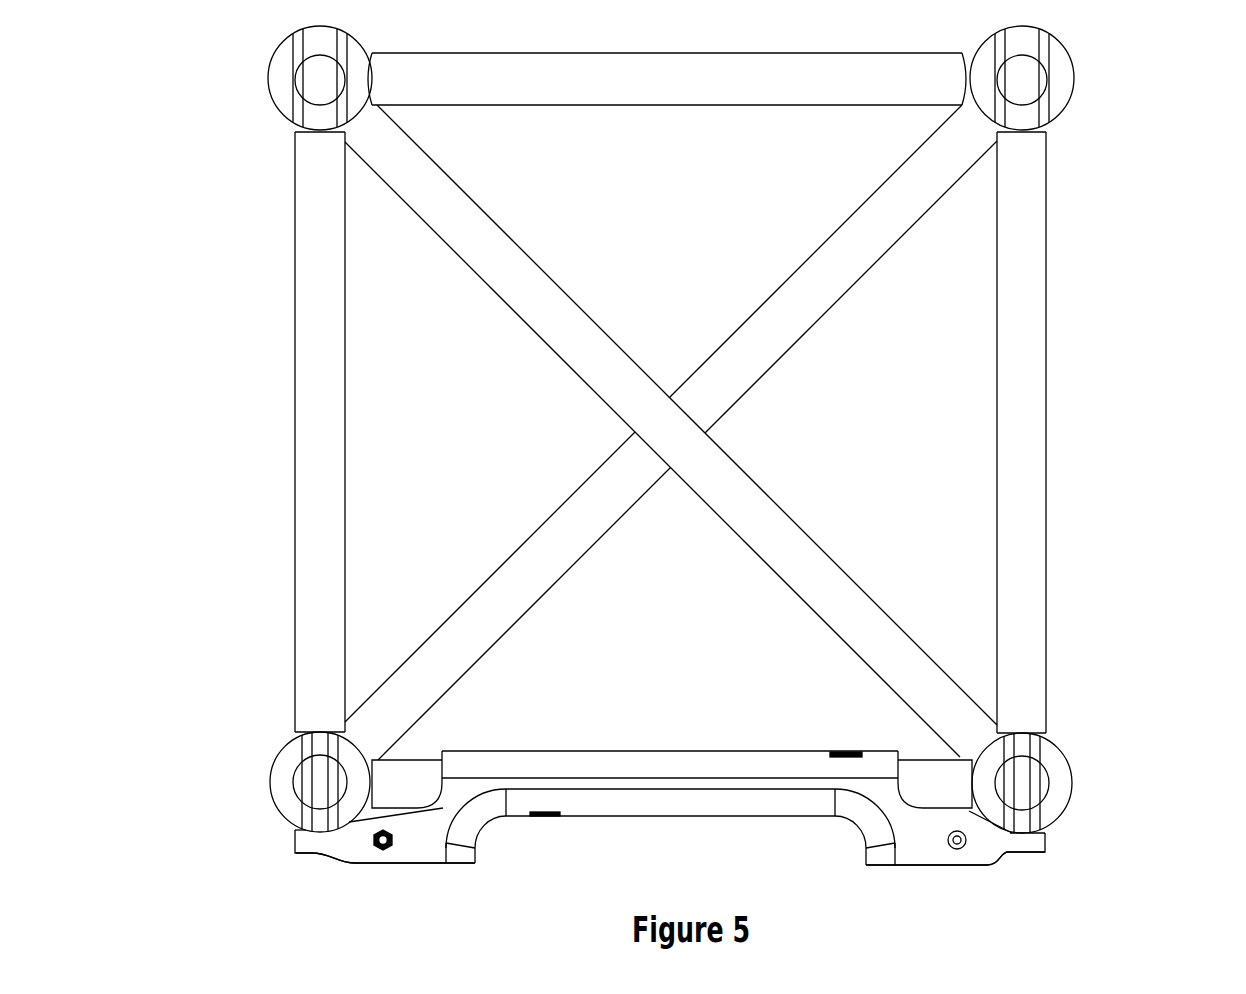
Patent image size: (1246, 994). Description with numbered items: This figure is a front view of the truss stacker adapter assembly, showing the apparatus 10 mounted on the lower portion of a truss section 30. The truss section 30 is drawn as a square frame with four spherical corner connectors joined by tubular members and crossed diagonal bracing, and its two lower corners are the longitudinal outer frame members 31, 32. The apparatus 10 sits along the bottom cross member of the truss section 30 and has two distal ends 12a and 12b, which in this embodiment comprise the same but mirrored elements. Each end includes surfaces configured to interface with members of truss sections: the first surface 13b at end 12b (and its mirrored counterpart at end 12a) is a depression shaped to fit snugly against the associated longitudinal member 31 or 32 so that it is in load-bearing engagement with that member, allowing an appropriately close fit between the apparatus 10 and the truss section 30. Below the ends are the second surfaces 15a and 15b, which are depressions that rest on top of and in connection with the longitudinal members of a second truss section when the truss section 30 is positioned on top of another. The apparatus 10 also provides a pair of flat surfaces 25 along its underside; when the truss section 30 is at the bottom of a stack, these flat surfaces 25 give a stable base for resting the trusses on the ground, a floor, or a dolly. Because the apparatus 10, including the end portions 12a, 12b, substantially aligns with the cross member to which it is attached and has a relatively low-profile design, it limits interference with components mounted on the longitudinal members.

The apparatus 10 is at (655, 732).
The distal end 12a is at (407, 838).
The distal end 12b is at (918, 836).
The first surface 13b is at (1012, 836).
The second surface 15a is at (322, 852).
The second surface 15b is at (1030, 853).
The flat surface 25 is at (410, 863).
The truss section 30 is at (1123, 142).
The longitudinal member 31 is at (1073, 772).
The longitudinal member 32 is at (277, 762).